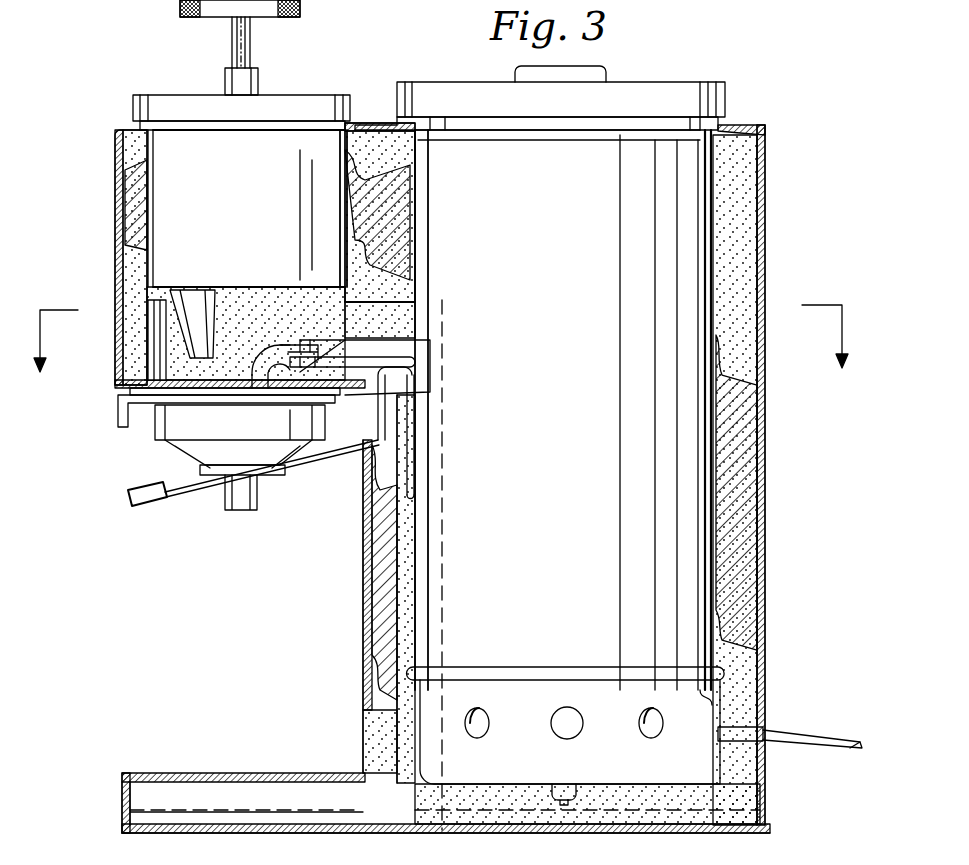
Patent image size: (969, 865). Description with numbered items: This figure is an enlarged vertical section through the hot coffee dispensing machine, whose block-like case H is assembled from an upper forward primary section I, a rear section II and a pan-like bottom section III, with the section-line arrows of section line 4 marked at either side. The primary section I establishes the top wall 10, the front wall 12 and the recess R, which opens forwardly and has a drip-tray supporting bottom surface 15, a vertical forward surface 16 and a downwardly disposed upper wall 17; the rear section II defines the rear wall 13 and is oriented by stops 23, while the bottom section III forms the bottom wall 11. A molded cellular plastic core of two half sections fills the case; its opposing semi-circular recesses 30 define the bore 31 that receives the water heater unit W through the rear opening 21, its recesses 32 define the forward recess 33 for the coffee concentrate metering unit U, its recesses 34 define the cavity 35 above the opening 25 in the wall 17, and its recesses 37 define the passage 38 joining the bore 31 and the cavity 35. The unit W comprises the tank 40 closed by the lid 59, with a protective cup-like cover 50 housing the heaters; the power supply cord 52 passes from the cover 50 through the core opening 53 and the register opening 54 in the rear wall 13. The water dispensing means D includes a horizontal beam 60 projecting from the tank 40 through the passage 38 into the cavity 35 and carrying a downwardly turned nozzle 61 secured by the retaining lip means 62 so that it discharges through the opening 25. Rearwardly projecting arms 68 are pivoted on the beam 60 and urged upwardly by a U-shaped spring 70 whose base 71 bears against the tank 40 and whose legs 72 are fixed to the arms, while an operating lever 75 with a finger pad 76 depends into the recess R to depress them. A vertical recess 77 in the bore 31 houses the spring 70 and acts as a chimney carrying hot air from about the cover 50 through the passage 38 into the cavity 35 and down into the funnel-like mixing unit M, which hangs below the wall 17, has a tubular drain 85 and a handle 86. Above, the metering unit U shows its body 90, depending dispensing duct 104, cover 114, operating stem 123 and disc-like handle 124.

The top wall 10 is at (378, 125).
The bottom wall 11 is at (712, 833).
The front wall 12 is at (115, 242).
The rear wall 13 is at (766, 447).
The bottom surface of recess 15 is at (205, 773).
The forward surface of recess 16 is at (363, 760).
The upper wall of recess 17 is at (130, 390).
The rear opening 21 is at (430, 132).
The stops 23 is at (740, 133).
The through opening 25 is at (258, 390).
The semi-circular recesses 30 is at (716, 267).
The bore 31 is at (708, 292).
The semi-circular recesses 32 is at (150, 172).
The forward recess 33 is at (178, 122).
The opposing recesses 34 is at (160, 318).
The cavity 35 is at (165, 340).
The opposing recesses 37 is at (398, 306).
The passage 38 is at (408, 283).
The tank 40 is at (695, 512).
The cover 50 is at (570, 742).
The power supply cord 52 is at (822, 745).
The core opening 53 is at (762, 732).
The register opening 54 is at (760, 757).
The lid 59 is at (648, 92).
The beam 60 is at (396, 336).
The water dispensing nozzle 61 is at (258, 380).
The stop flange and retaining lip means 62 is at (292, 338).
The arms 68 is at (400, 360).
The U-shaped spring 70 is at (412, 432).
The spring base 71 is at (416, 498).
The spring legs 72 is at (415, 466).
The operating lever 75 is at (182, 495).
The finger engaging pad 76 is at (135, 504).
The vertical recess 77 is at (400, 556).
The tubular drain 85 is at (236, 512).
The handle 86 is at (128, 415).
The body 90 is at (165, 205).
The dispensing duct 104 is at (195, 287).
The cover 114 is at (345, 68).
The operating stem 123 is at (255, 42).
The handle 124 is at (302, 12).
The section line 4- 4 is at (437, 360).
The case H is at (112, 157).
The coffee concentrate metering unit U is at (165, 95).
The water dispensing means D is at (308, 338).
The water heater unit W is at (685, 255).
The mixing unit M is at (155, 443).
The recess R is at (306, 575).
The primary section I is at (160, 773).
The rear section II is at (768, 605).
The bottom section III is at (612, 834).